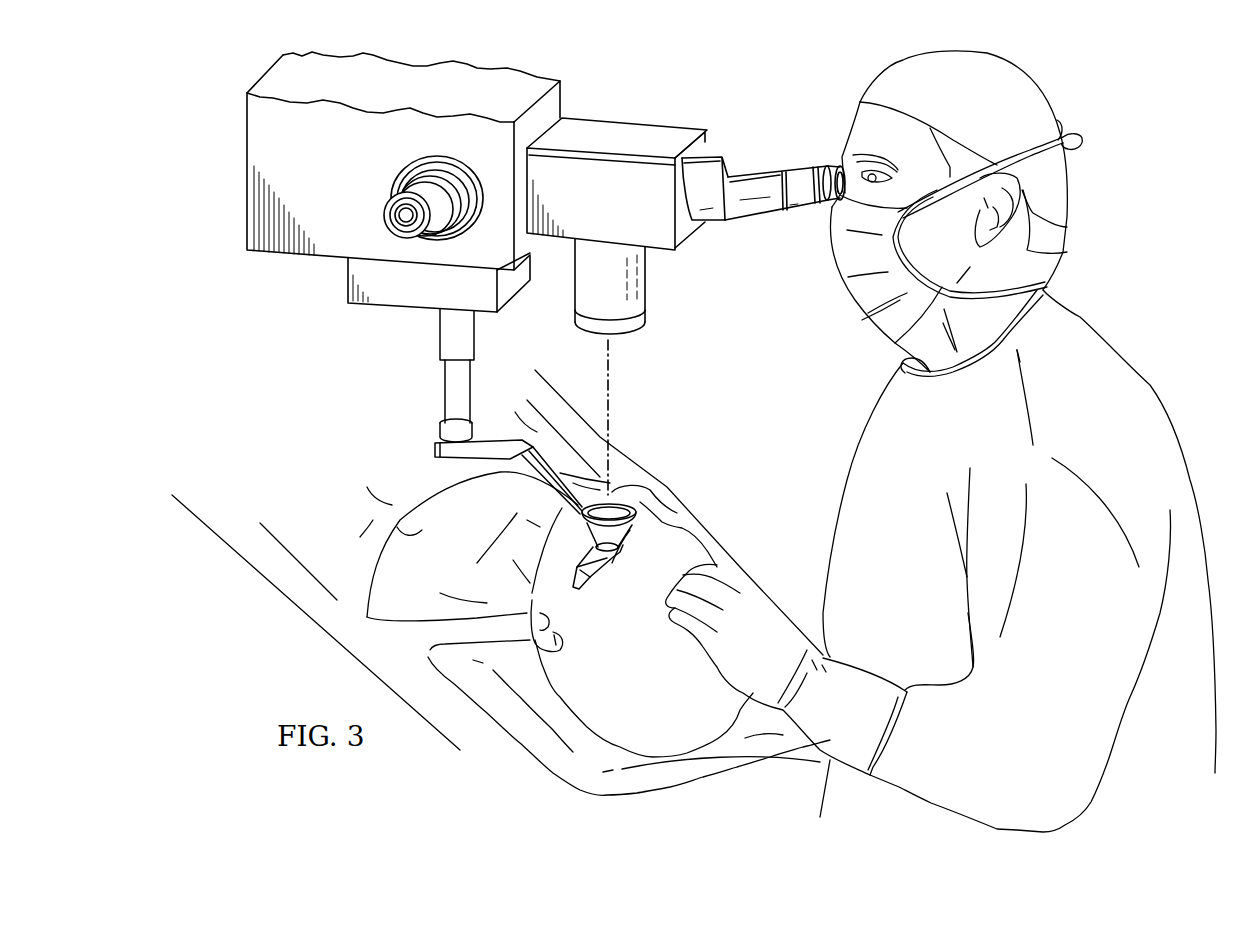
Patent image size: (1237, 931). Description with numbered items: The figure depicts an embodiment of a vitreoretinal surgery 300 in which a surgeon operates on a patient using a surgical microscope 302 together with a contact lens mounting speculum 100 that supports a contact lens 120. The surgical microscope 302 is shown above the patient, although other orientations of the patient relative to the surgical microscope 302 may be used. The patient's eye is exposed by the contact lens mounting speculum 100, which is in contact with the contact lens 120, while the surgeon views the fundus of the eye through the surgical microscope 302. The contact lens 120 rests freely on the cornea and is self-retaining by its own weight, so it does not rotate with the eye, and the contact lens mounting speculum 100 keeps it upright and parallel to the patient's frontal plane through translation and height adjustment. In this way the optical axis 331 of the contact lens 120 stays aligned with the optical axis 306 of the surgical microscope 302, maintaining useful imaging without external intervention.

The contact lens mounting speculum 100 is at (592, 585).
The contact lens 120 is at (643, 490).
The vitreoretinal surgery 300 is at (1164, 129).
The surgical microscope 302 is at (246, 166).
The optical axis of surgical microscope 306 is at (612, 383).
The optical axis of contact lens 331 is at (610, 457).